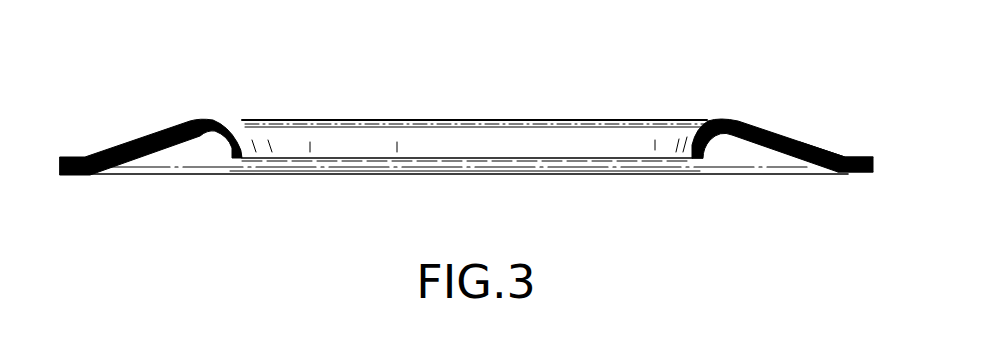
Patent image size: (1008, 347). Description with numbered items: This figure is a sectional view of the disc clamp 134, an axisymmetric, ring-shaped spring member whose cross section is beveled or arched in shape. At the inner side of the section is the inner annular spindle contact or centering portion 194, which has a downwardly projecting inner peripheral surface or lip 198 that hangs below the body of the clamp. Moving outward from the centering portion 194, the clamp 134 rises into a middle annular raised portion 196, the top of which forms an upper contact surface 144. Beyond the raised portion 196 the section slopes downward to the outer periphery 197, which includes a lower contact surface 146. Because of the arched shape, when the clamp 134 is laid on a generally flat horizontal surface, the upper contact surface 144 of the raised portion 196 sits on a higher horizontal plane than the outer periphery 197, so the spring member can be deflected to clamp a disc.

The disc clamp 134 is at (772, 106).
The upper contact surface 144 is at (732, 127).
The lower contact surface 146 is at (850, 173).
The centering portion 194 is at (262, 128).
The raised portion 196 is at (199, 112).
The outer periphery 197 is at (849, 146).
The lip 198 is at (242, 137).